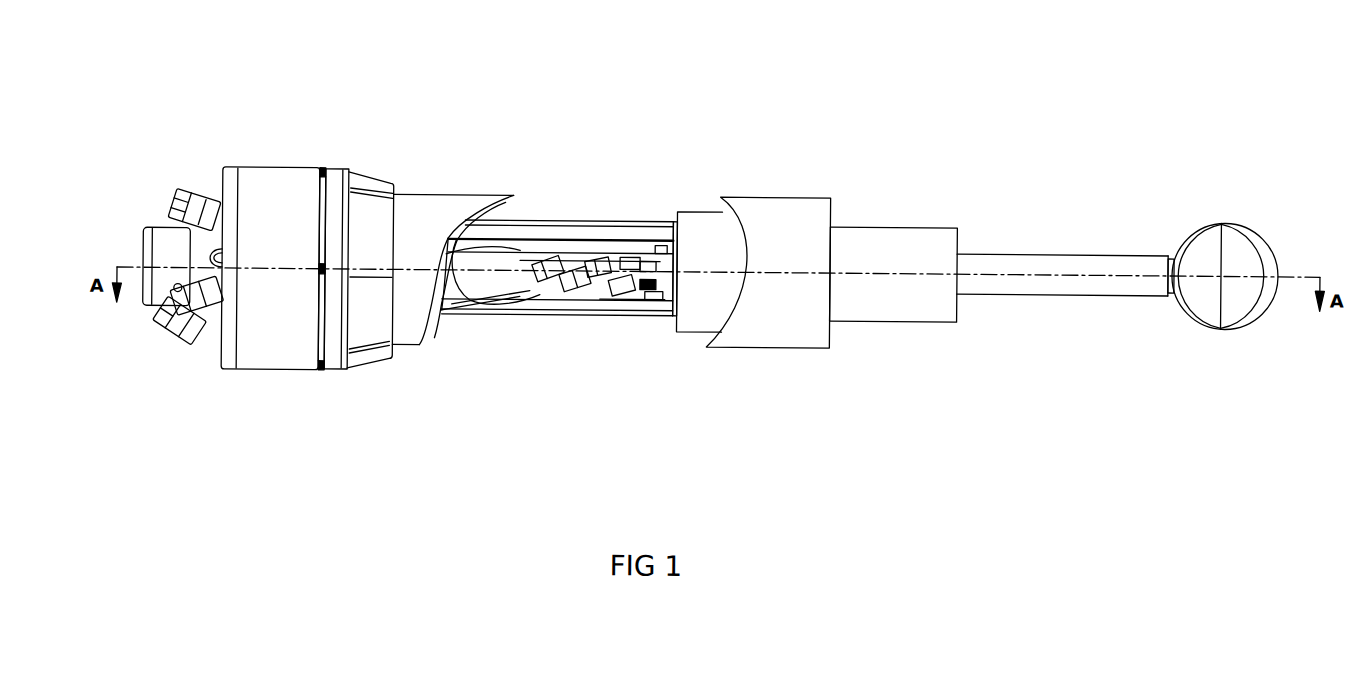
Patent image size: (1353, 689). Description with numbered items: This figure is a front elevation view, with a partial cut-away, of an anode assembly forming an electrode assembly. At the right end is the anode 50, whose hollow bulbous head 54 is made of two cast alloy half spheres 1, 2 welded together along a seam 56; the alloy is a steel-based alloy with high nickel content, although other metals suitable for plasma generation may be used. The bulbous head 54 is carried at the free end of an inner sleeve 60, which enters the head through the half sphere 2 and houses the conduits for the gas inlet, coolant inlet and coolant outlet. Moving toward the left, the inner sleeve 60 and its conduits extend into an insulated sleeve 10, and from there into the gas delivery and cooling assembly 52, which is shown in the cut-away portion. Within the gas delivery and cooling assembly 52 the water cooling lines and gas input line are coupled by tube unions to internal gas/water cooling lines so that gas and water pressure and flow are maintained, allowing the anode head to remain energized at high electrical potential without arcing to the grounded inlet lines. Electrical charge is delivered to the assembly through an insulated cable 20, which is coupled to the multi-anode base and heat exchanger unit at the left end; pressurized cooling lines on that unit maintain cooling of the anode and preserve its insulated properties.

The anode 50 is at (883, 139).
The gas delivery and cooling assembly 52 is at (543, 279).
The insulated cable 20 is at (552, 221).
The insulated sleeve 10 is at (890, 226).
The inner sleeve 60 is at (1172, 252).
The hollow bulbous head 54 is at (1240, 219).
The seam 56 is at (1213, 241).
The half sphere 2 is at (1193, 293).
The half sphere 1 is at (1247, 298).